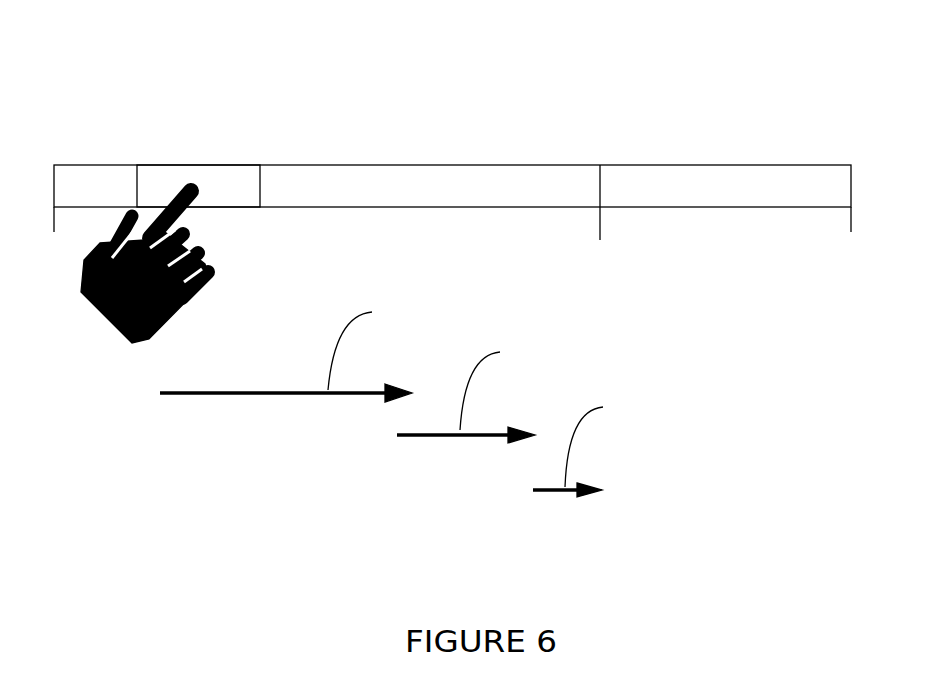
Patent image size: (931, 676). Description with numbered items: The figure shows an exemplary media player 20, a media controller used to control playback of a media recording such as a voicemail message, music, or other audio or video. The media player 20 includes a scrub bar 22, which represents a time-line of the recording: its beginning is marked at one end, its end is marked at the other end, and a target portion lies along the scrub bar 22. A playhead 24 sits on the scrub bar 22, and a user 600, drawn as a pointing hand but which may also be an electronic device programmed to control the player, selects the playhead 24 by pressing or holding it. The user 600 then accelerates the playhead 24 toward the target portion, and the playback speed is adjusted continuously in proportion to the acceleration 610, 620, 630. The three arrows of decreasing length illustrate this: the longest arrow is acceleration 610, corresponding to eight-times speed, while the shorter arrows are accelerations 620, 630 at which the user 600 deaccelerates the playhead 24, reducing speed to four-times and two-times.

The media player 20 is at (457, 57).
The scrub bar 22 is at (302, 165).
The playhead 24 is at (156, 172).
The user 600 is at (135, 342).
The acceleration 610 is at (247, 397).
The acceleration 620 is at (440, 437).
The acceleration 630 is at (552, 492).